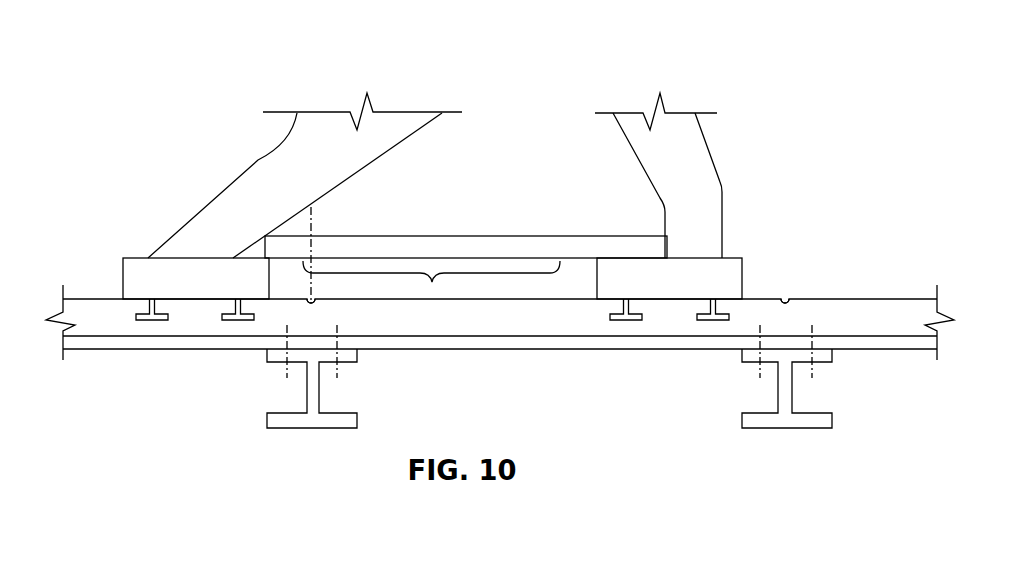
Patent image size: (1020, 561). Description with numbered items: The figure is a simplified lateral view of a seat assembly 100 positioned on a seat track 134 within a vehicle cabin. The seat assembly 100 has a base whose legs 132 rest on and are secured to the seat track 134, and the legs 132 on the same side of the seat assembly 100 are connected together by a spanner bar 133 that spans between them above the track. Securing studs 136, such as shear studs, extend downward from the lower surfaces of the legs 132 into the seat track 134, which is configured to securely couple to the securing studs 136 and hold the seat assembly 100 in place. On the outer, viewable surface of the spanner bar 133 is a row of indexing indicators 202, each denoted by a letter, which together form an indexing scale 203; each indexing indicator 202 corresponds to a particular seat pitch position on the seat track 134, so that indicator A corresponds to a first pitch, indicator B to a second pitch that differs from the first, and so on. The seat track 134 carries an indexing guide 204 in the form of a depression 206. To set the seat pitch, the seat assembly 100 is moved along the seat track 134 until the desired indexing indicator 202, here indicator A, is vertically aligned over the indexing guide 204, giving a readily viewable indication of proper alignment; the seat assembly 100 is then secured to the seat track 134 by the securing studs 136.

The seat assembly 100 is at (217, 98).
The legs 132 is at (252, 168).
The spanner bar 133 is at (490, 226).
The seat track 134 is at (92, 299).
The securing studs 136 is at (154, 321).
The indexing indicators 202 is at (316, 235).
The indexing scale 203 is at (432, 282).
The indexing guide 204 is at (303, 290).
The depression 206 is at (316, 303).